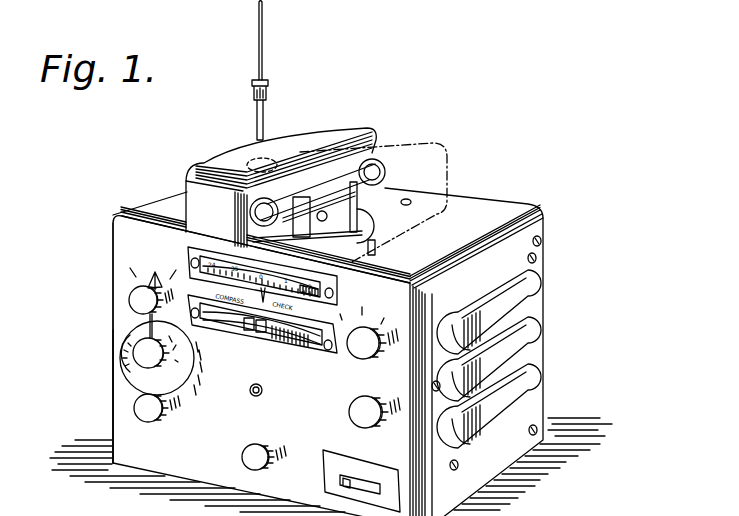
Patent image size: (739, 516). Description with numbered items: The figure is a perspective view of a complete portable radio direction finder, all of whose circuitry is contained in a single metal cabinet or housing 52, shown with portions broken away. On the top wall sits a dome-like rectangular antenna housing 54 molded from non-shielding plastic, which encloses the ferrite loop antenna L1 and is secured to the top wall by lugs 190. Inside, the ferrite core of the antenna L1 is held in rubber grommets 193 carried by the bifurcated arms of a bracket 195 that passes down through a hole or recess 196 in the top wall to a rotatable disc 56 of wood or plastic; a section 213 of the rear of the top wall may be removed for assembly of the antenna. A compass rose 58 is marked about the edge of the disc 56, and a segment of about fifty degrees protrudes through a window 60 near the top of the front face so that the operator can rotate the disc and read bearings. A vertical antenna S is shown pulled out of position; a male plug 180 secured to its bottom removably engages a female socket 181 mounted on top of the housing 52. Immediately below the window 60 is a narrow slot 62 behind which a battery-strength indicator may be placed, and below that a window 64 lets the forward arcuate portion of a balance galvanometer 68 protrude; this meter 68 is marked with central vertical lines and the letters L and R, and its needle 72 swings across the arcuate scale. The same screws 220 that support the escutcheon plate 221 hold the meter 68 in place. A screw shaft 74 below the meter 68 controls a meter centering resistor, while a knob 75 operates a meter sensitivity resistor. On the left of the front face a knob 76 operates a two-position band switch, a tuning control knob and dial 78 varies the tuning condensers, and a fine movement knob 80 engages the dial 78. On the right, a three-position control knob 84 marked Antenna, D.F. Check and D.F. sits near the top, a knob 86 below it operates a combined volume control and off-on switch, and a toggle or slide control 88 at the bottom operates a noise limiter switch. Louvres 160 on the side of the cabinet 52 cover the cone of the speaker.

The vertical antenna S is at (263, 37).
The male plug 180 is at (250, 110).
The female socket 181 is at (250, 163).
The antenna housing 54 is at (233, 160).
The rotatable disc 56 is at (282, 270).
The compass rose 58 is at (262, 283).
The window 60 is at (272, 280).
The rubber grommets 193 is at (250, 205).
The ferrite loop antenna L1 is at (337, 185).
The bracket 195 is at (390, 187).
The removable section 213 is at (398, 192).
The hole or recess 196 is at (360, 230).
The lugs 190 is at (376, 248).
The louvres 160 is at (533, 384).
The band switch knob 76 is at (138, 300).
The narrow slot 62 is at (200, 302).
The tuning control knob and dial 78 is at (122, 365).
The fine movement knob 80 is at (133, 410).
The screws 220 is at (196, 318).
The window 64 is at (250, 312).
The needle 72 is at (252, 332).
The balance galvanometer 68 is at (272, 338).
The escutcheon plate 221 is at (310, 356).
The screw shaft 74 is at (249, 391).
The cabinet or housing 52 is at (228, 436).
The knob 75 is at (241, 457).
The control knob 84 is at (381, 343).
The knob 86 is at (349, 412).
The noise limiter control 88 is at (353, 492).